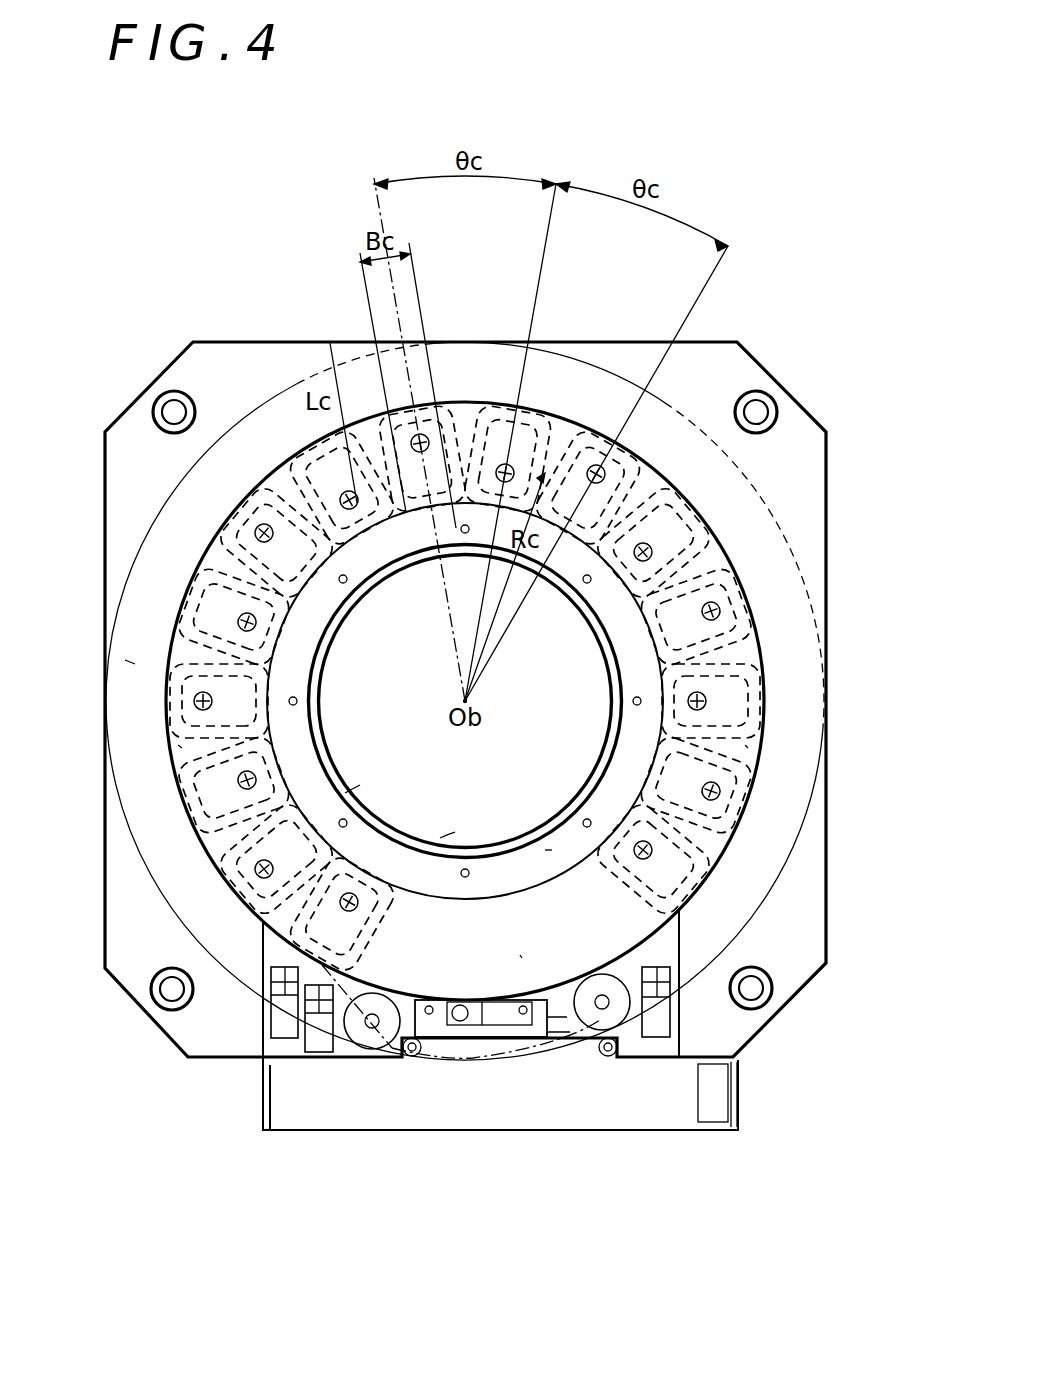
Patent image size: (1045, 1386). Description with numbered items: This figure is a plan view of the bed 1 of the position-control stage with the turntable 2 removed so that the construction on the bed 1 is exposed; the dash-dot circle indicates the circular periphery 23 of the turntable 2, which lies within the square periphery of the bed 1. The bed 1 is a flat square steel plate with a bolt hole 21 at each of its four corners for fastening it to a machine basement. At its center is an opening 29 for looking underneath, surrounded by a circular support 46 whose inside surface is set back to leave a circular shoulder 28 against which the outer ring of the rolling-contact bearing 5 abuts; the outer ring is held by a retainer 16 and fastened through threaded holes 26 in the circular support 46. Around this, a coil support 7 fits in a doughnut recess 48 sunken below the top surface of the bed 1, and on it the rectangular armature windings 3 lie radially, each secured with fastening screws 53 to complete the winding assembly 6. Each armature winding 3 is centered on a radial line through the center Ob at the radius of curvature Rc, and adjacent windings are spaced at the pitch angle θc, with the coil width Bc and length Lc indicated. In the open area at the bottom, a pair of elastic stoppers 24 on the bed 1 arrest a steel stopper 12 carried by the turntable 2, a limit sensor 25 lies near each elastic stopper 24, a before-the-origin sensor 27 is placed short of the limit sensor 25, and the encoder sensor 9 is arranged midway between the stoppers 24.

The bed 1 is at (140, 462).
The turntable 2 is at (128, 667).
The armature winding 3 is at (372, 393).
The rolling-contact bearing 5 is at (317, 663).
The winding assembly 6 is at (730, 540).
The coil support 7 is at (187, 747).
The sensor 9 is at (477, 1037).
The steel stopper 12 is at (215, 905).
The retainer 16 is at (300, 752).
The bolt hole 21 is at (174, 402).
The circular periphery 23 is at (690, 412).
The elastic stopper 24 is at (380, 1032).
The limit sensor 25 is at (318, 1052).
The threaded hole 26 is at (585, 828).
The before-the-origin sensor 27 is at (283, 1022).
The circular shoulder 28 is at (342, 795).
The opening 29 is at (445, 836).
The circular support 46 is at (548, 850).
The doughnut recess 48 is at (645, 920).
The fastening screw 53 is at (240, 624).